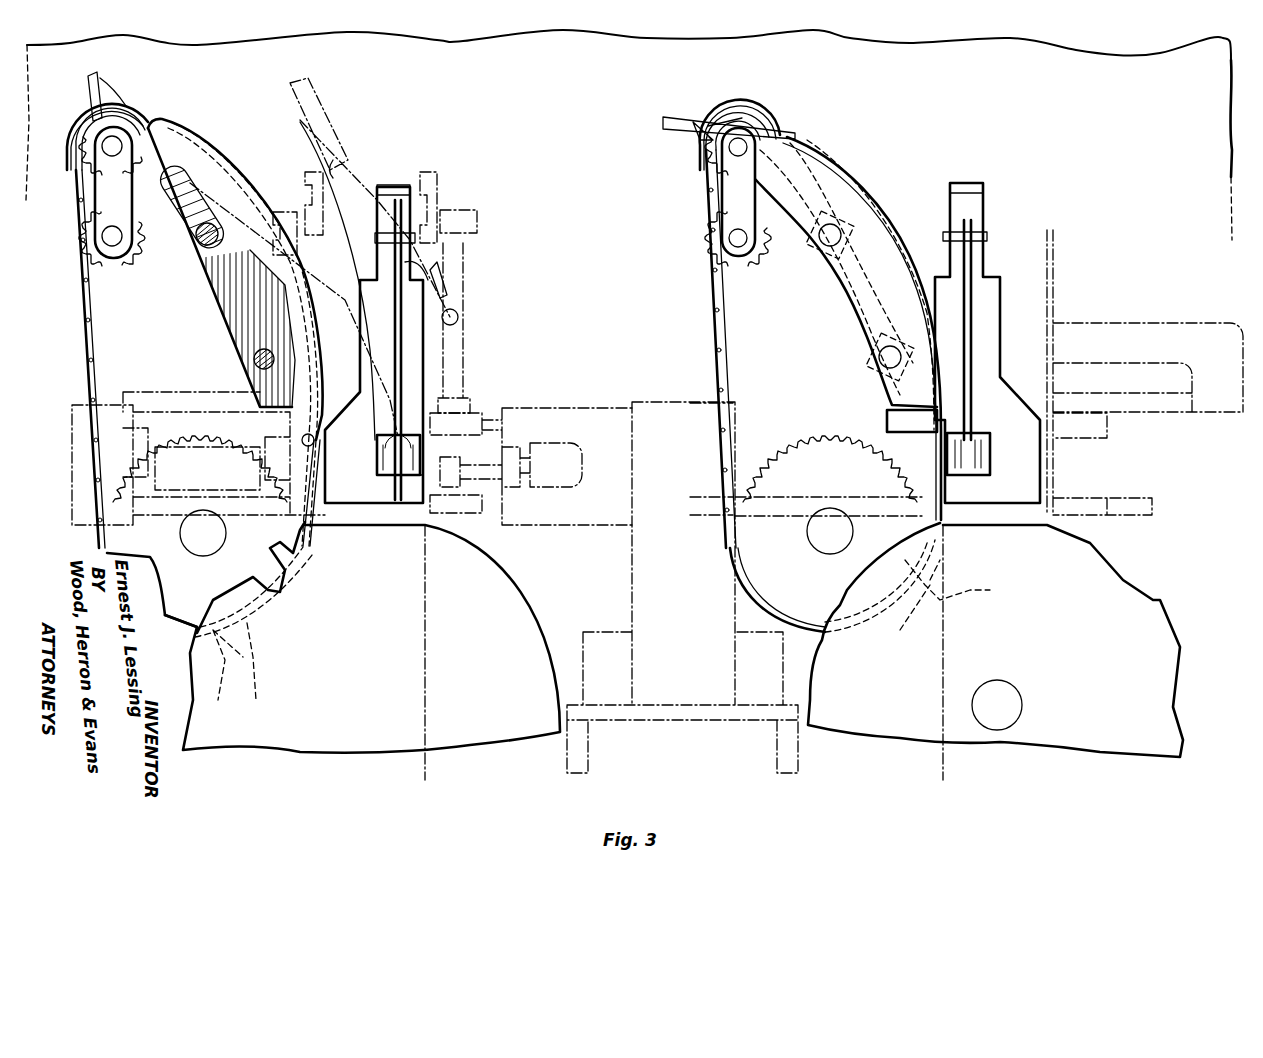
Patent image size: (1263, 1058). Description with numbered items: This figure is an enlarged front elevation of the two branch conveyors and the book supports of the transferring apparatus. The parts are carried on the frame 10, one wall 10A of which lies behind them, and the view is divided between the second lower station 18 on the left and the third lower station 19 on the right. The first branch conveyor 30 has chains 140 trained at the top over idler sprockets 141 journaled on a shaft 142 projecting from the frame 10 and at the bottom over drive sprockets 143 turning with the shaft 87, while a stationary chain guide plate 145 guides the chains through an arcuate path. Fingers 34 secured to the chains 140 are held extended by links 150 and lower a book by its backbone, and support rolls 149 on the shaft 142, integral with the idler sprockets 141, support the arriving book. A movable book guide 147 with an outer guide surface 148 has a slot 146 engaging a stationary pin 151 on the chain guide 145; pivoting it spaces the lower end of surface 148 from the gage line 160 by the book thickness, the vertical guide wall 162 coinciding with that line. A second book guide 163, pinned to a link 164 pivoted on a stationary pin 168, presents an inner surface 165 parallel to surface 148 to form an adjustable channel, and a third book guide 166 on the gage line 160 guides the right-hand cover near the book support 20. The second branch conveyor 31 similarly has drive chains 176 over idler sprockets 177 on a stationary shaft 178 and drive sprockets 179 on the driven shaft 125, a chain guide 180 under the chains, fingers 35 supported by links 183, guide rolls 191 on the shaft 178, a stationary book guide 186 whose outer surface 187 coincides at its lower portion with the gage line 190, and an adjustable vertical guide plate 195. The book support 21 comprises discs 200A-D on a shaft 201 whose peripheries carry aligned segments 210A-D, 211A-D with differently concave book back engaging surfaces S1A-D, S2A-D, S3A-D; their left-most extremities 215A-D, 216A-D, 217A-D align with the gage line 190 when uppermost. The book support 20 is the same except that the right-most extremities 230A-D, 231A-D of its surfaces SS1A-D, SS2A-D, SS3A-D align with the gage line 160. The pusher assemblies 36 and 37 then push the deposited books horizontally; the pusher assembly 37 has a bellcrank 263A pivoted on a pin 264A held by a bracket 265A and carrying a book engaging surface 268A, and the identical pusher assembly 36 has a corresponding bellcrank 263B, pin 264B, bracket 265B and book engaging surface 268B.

The frame 10 is at (1085, 65).
The frame wall 10A is at (937, 104).
The second lower station 18 is at (452, 525).
The third lower station 19 is at (1072, 522).
The book support 20 is at (513, 578).
The book support 21 is at (1172, 618).
The first branch conveyor 30 is at (206, 80).
The second branch conveyor 31 is at (790, 112).
The fingers 34 is at (101, 92).
The fingers 35 is at (664, 127).
The pusher assembly 36 is at (405, 372).
The pusher assembly 37 is at (982, 355).
The shaft 87 is at (207, 556).
The driven shaft 125 is at (820, 555).
The chains 140 is at (82, 304).
The idler sprockets 141 is at (93, 163).
The shaft 142 is at (113, 157).
The drive sprockets 143 is at (215, 432).
The chain guide plate 145 is at (242, 322).
The slot 146 is at (195, 232).
The movable book guide 147 is at (210, 187).
The outer guide surface 148 is at (238, 160).
The support rolls 149 is at (73, 128).
The links 150 is at (102, 105).
The stationary pin 151 is at (200, 282).
The gage line 160 is at (430, 716).
The stationary vertical guide wall 162 is at (440, 275).
The second book guide 163 is at (350, 130).
The link 164 is at (448, 297).
The inner book guide surface 165 is at (340, 165).
The third book guide 166 is at (423, 488).
The stationary pin 168 is at (460, 318).
The drive chains 176 is at (714, 324).
The idler sprockets 177 is at (718, 163).
The stationary shaft 178 is at (740, 140).
The drive sprockets 179 is at (830, 437).
The chain guide 180 is at (835, 285).
The links 183 is at (697, 120).
The stationary book guide 186 is at (848, 173).
The outer guide surface 187 is at (872, 186).
The gage line 190 is at (948, 680).
The guide rolls 191 is at (725, 98).
The vertical guide plate 195 is at (1056, 270).
The discs 200A-D is at (345, 760).
The shaft 201 is at (1008, 706).
The aligned segments 210A-D is at (1043, 542).
The aligned segments 211A-D is at (1130, 608).
The left-most extremity 215A-D is at (940, 523).
The left-most extremity 216A-D is at (1120, 558).
The surface 217A-D is at (1178, 650).
The right-most extremity 230A-D is at (435, 540).
The right-most extremity 231A-D is at (298, 558).
The bellcrank 263A is at (968, 312).
The rod 263B is at (402, 374).
The pin 264A is at (988, 237).
The collar 264B is at (416, 238).
The bracket 265A is at (968, 186).
The cap 265B is at (398, 186).
The book engaging surface 268A is at (990, 452).
The block 268B is at (377, 445).
The book back engaging surfaces S1A-D is at (990, 527).
The book back engaging surfaces S2A-D is at (1128, 582).
The switch S3A-D is at (1176, 706).
The book back engaging surfaces SS1A-D is at (370, 527).
The book back engaging surfaces SS2A-D is at (282, 600).
The switch SS3A-D is at (195, 712).